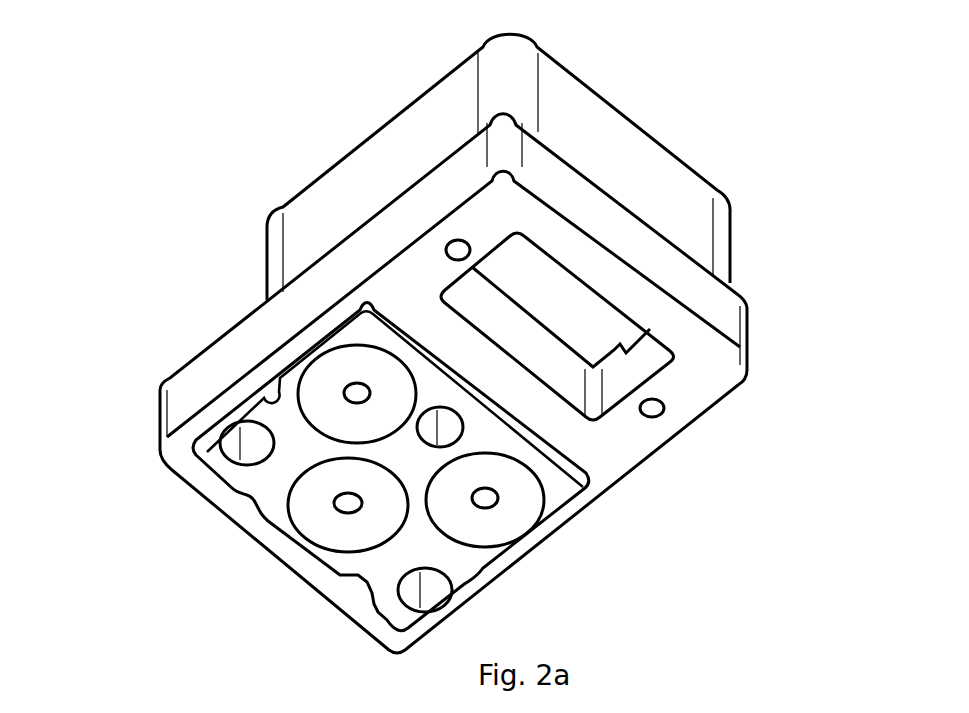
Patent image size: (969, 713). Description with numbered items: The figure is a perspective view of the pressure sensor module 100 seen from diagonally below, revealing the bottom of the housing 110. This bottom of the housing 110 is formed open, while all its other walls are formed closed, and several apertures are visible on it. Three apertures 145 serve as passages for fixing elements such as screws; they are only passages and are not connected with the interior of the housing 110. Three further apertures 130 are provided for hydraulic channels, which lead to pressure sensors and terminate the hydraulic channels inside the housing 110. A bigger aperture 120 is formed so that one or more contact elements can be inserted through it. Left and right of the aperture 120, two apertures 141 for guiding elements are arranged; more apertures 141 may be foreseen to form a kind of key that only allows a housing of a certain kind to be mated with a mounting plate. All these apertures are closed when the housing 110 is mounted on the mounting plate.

The pressure sensor module 100 is at (412, 351).
The housing 110 is at (650, 180).
The aperture 120 is at (577, 324).
The apertures 130 is at (357, 393).
The apertures 141 is at (455, 251).
The apertures 145 is at (248, 443).